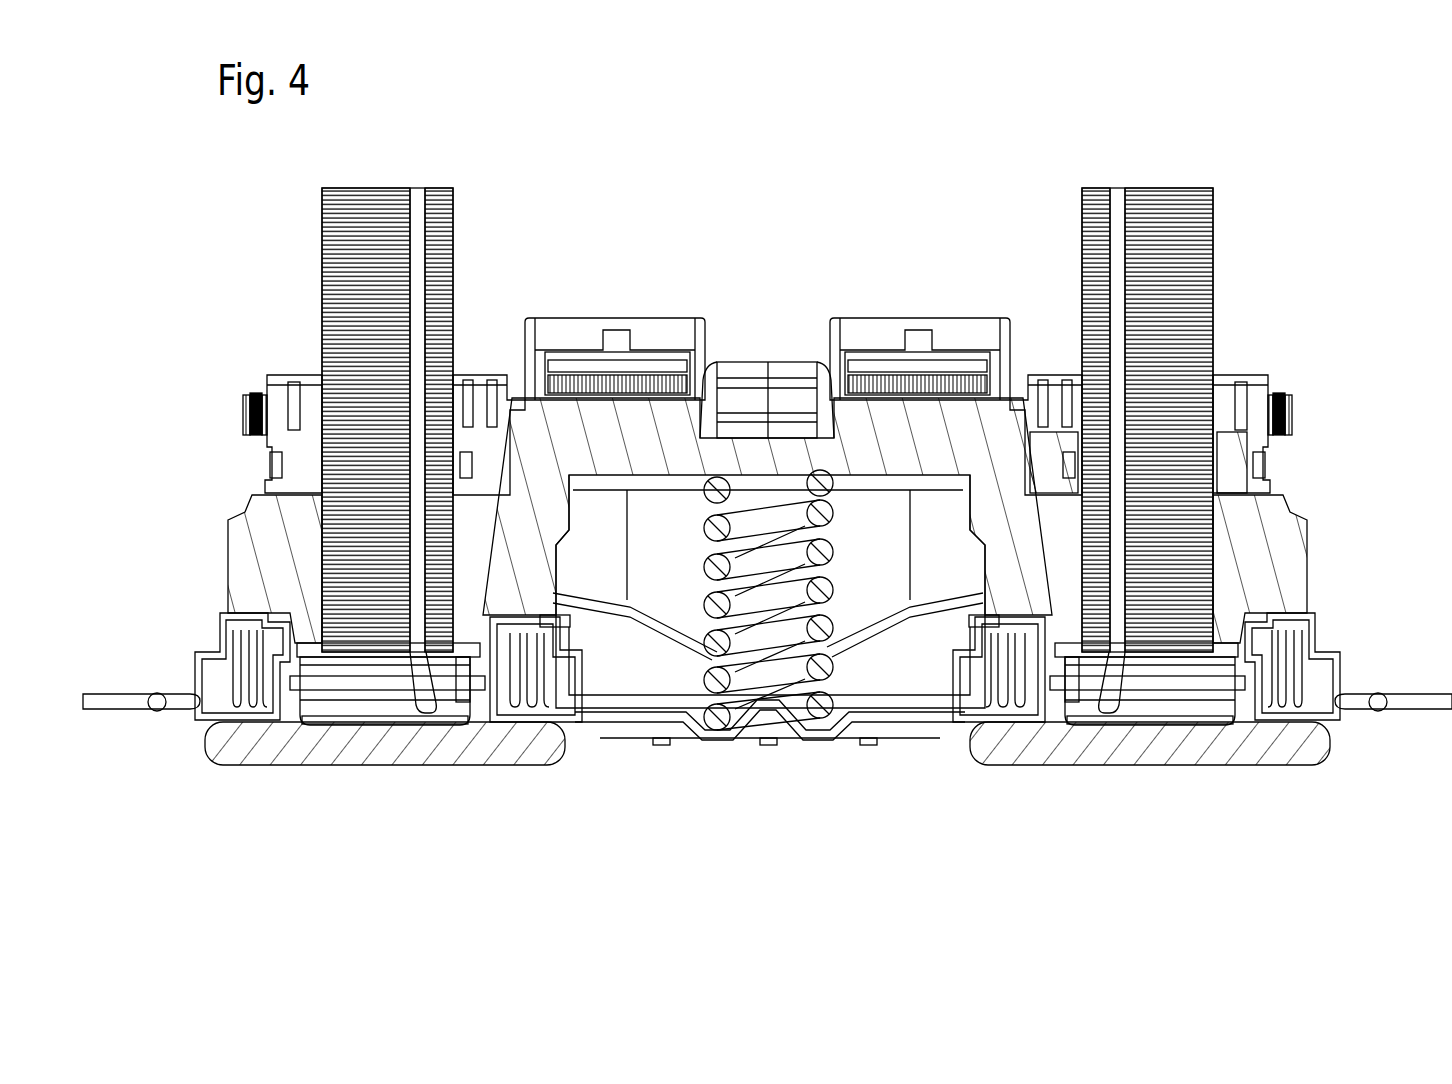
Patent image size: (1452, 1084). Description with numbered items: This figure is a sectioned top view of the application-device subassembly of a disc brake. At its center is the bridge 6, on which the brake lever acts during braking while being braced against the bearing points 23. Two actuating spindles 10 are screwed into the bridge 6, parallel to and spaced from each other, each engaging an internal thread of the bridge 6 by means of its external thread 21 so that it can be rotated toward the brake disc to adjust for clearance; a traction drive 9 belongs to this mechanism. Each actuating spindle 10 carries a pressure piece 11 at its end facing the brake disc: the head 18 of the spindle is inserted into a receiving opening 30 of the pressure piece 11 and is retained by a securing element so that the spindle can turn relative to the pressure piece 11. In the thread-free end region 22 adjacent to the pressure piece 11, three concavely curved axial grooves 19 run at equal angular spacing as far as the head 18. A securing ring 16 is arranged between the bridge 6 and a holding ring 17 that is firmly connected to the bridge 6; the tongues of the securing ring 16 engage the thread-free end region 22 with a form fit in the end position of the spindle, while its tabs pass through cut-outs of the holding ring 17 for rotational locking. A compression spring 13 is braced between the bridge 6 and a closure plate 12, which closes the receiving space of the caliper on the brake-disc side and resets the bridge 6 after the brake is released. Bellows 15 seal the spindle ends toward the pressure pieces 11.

The bridge 6 is at (683, 450).
The traction drive 9 is at (1300, 425).
The actuating spindle 10 is at (462, 205).
The pressure piece 11 is at (300, 727).
The closure plate 12 is at (640, 712).
The compression spring 13 is at (752, 676).
The bellows 15 is at (240, 660).
The securing ring 16 is at (466, 682).
The holding ring 17 is at (492, 655).
The head 18 is at (343, 665).
The axial groove 19 is at (425, 690).
The external thread 21 is at (322, 278).
The thread-free end region 22 is at (297, 737).
The bearing point 23 is at (648, 335).
The receiving opening 30 is at (372, 723).